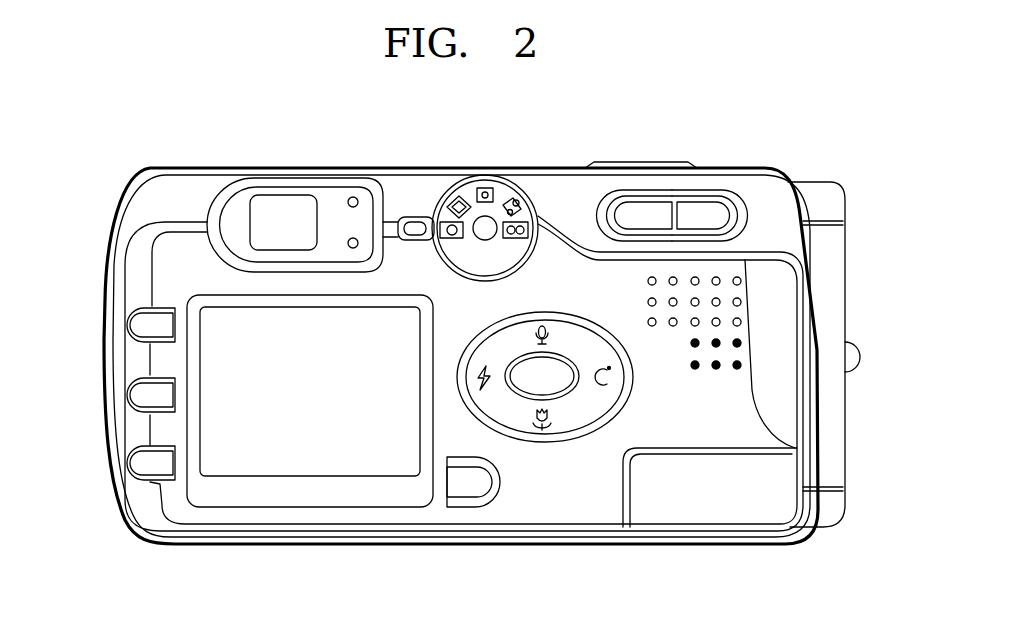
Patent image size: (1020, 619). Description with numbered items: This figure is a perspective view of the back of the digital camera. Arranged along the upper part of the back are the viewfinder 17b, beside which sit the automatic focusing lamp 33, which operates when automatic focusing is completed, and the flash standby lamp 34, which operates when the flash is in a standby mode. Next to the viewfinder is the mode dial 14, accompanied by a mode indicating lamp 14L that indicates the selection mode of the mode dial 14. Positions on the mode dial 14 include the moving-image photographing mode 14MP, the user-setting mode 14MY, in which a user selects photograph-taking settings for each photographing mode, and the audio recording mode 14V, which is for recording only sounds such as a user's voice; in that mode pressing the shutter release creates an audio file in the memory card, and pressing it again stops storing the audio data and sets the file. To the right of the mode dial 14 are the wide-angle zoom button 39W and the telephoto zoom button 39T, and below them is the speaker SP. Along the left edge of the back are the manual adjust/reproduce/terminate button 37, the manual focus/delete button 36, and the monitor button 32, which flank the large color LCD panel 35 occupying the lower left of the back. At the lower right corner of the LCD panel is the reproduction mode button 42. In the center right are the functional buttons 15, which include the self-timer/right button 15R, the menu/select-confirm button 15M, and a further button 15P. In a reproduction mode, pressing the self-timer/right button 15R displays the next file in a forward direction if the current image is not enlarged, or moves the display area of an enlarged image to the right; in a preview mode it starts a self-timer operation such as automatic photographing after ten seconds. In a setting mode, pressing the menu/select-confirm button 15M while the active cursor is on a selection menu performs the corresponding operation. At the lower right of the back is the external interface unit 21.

The viewfinder 17b is at (282, 205).
The automatic focusing lamp 33 is at (353, 197).
The flash standby lamp 34 is at (358, 240).
The mode indicating lamp 14L is at (420, 230).
The mode dial 14 is at (518, 204).
The moving-image photographing mode 14MP is at (513, 197).
The audio recording mode 14V is at (522, 222).
The user-setting mode 14MY is at (520, 250).
The wide-angle zoom button 39W is at (640, 215).
The telephoto zoom button 39T is at (707, 215).
The speaker SP is at (742, 346).
The manual adjust/reproduce/terminate button 37 is at (138, 324).
The manual focus/delete button 36 is at (138, 394).
The monitor button 32 is at (141, 462).
The color LCD panel 35 is at (303, 452).
The reproduction mode button 42 is at (463, 488).
The functional buttons 15 is at (556, 445).
The self-timer/right button 15R is at (532, 333).
The menu/select-confirm button 15M is at (563, 382).
The macro button 15P is at (553, 415).
The external interface unit 21 is at (760, 500).